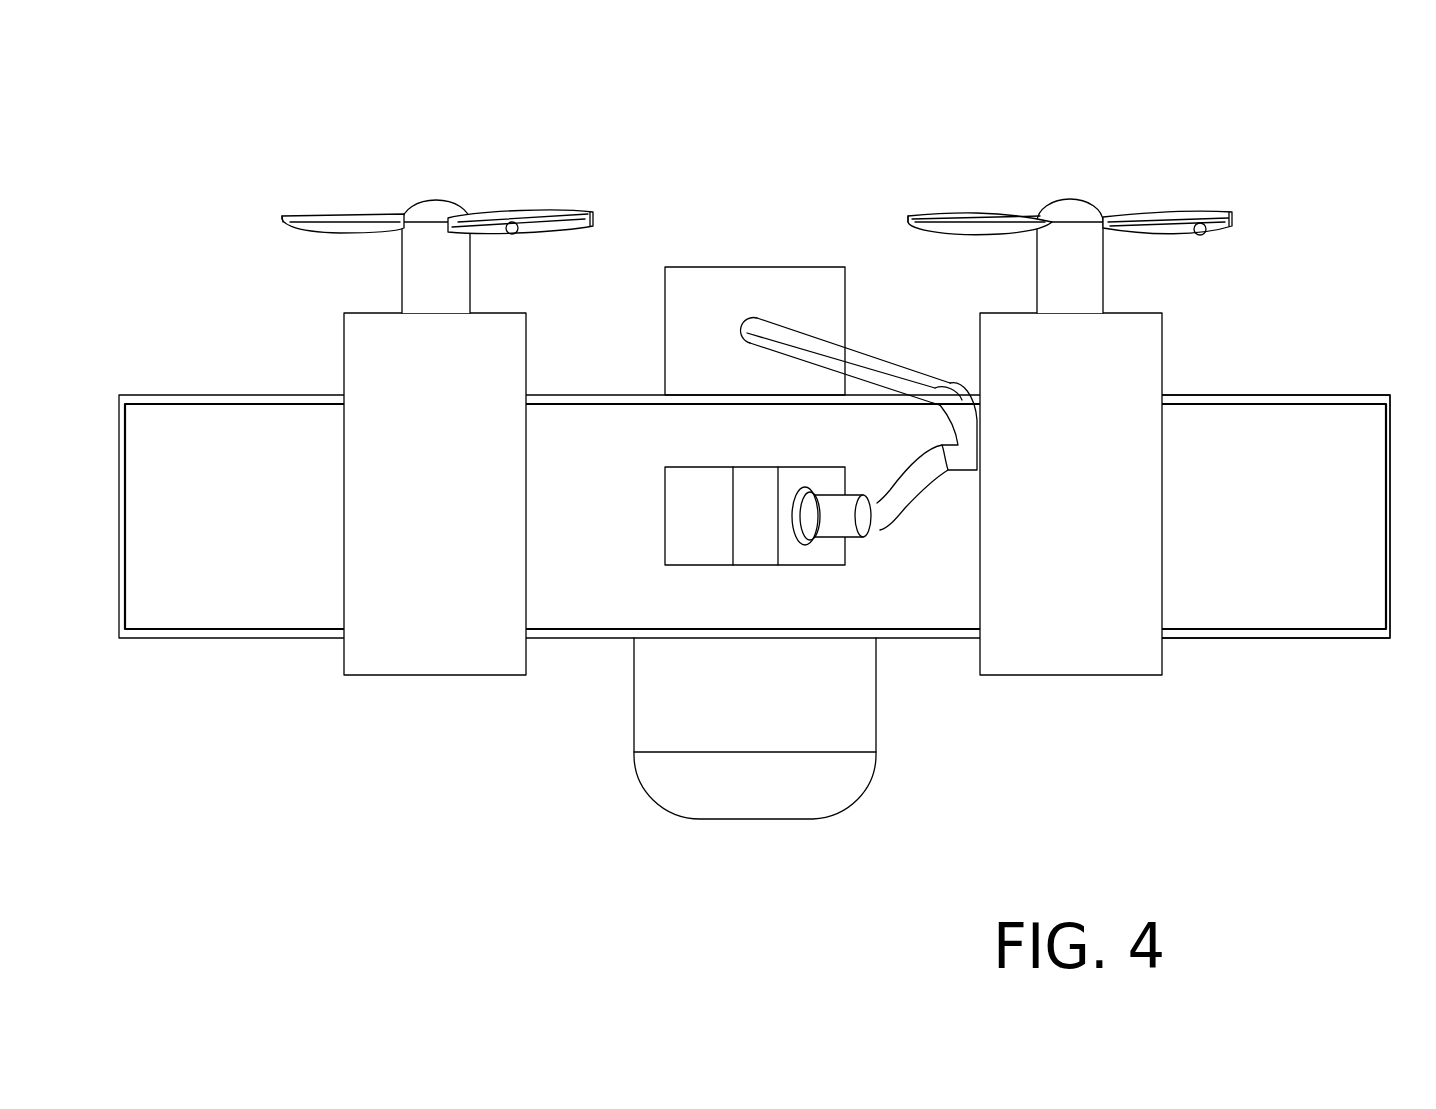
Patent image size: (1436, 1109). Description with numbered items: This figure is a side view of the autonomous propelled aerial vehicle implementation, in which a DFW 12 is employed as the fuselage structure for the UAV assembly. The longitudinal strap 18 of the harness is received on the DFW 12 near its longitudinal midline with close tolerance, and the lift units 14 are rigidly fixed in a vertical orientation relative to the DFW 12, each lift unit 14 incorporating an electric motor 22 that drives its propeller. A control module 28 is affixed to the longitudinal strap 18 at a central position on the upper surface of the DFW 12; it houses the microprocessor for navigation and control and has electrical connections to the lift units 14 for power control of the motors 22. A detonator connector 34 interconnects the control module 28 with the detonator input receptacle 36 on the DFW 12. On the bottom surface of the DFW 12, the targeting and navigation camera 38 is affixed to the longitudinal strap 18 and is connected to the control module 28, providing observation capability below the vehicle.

The DFW 12 is at (272, 508).
The lift unit 14 is at (450, 620).
The longitudinal strap 18 is at (1294, 398).
The electric motor 22 is at (343, 217).
The control module 28 is at (776, 280).
The detonator connector 34 is at (893, 375).
The detonator input receptacle 36 is at (818, 543).
The targeting and navigation camera 38 is at (747, 693).